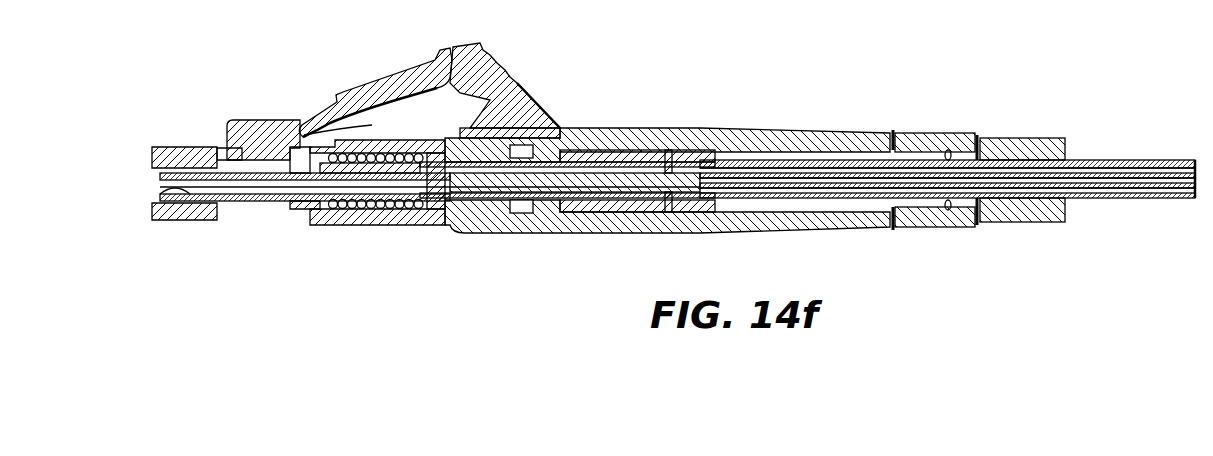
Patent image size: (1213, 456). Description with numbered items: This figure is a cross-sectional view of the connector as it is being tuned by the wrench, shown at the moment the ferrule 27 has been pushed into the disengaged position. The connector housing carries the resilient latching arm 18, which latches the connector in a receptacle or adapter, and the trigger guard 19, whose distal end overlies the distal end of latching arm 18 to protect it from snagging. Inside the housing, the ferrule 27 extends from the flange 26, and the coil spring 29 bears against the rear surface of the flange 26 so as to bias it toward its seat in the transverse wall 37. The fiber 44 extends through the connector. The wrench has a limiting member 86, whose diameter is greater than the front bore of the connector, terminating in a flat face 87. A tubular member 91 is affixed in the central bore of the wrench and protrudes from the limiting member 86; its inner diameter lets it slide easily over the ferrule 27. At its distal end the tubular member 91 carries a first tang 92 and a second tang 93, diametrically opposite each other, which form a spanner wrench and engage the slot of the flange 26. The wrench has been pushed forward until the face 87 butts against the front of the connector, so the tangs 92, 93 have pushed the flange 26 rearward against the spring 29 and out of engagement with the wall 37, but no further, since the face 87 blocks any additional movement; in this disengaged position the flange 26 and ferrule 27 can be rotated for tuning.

The resilient latching arm 18 is at (402, 85).
The trigger guard 19 is at (498, 57).
The flange 26 is at (318, 212).
The ferrule 27 is at (258, 190).
The coil spring 29 is at (371, 210).
The transverse wall 37 is at (288, 146).
The fiber 44 is at (437, 194).
The limiting member 86 is at (178, 146).
The flat face 87 is at (236, 146).
The tubular member 91 is at (187, 194).
The first tang 92 is at (372, 125).
The second tang 93 is at (303, 205).